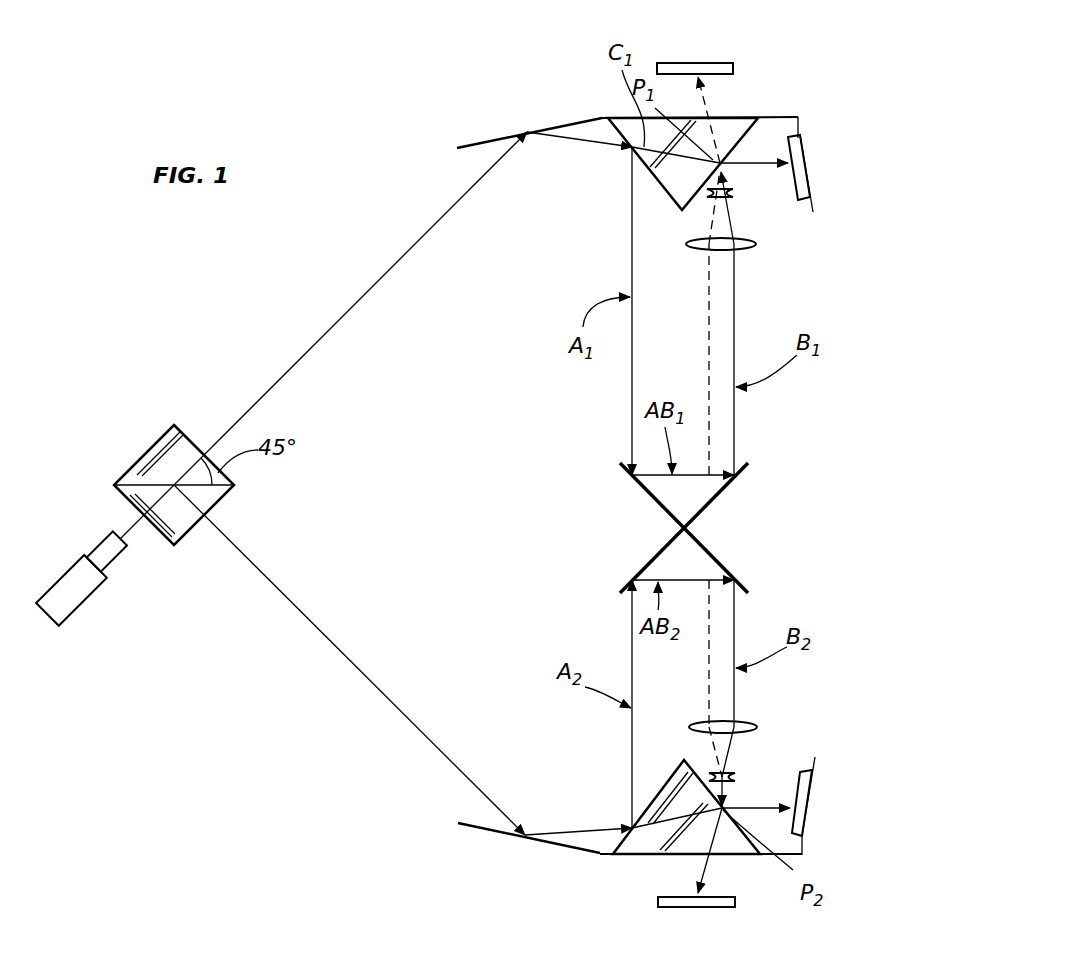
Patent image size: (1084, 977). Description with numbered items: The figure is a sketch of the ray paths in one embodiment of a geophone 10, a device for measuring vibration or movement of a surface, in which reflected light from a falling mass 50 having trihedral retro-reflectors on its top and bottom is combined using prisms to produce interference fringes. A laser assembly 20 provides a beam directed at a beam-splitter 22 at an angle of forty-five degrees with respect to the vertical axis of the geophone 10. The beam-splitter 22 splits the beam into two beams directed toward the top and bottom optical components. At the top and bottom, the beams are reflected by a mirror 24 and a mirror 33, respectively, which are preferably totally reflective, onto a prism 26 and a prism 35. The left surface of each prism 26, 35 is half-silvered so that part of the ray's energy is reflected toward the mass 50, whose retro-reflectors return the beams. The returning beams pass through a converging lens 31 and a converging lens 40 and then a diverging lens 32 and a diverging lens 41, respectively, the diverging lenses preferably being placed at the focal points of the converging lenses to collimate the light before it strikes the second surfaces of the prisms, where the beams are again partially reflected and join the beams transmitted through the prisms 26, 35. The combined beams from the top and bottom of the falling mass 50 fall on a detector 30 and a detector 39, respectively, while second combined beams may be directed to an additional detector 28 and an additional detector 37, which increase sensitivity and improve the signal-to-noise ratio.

The geophone 10 is at (355, 217).
The laser assembly 20 is at (80, 607).
The beam-splitter 22 is at (140, 458).
The mirror 24 is at (490, 138).
The prism 26 is at (633, 133).
The detector 28 is at (708, 63).
The detector 30 is at (802, 163).
The converging lens 31 is at (758, 245).
The diverging lens 32 is at (735, 193).
The mirror 33 is at (500, 835).
The prism 35 is at (648, 847).
The detector 37 is at (715, 902).
The detector 39 is at (805, 793).
The converging lens 40 is at (753, 727).
The diverging lens 41 is at (736, 777).
The falling mass 50 is at (725, 503).